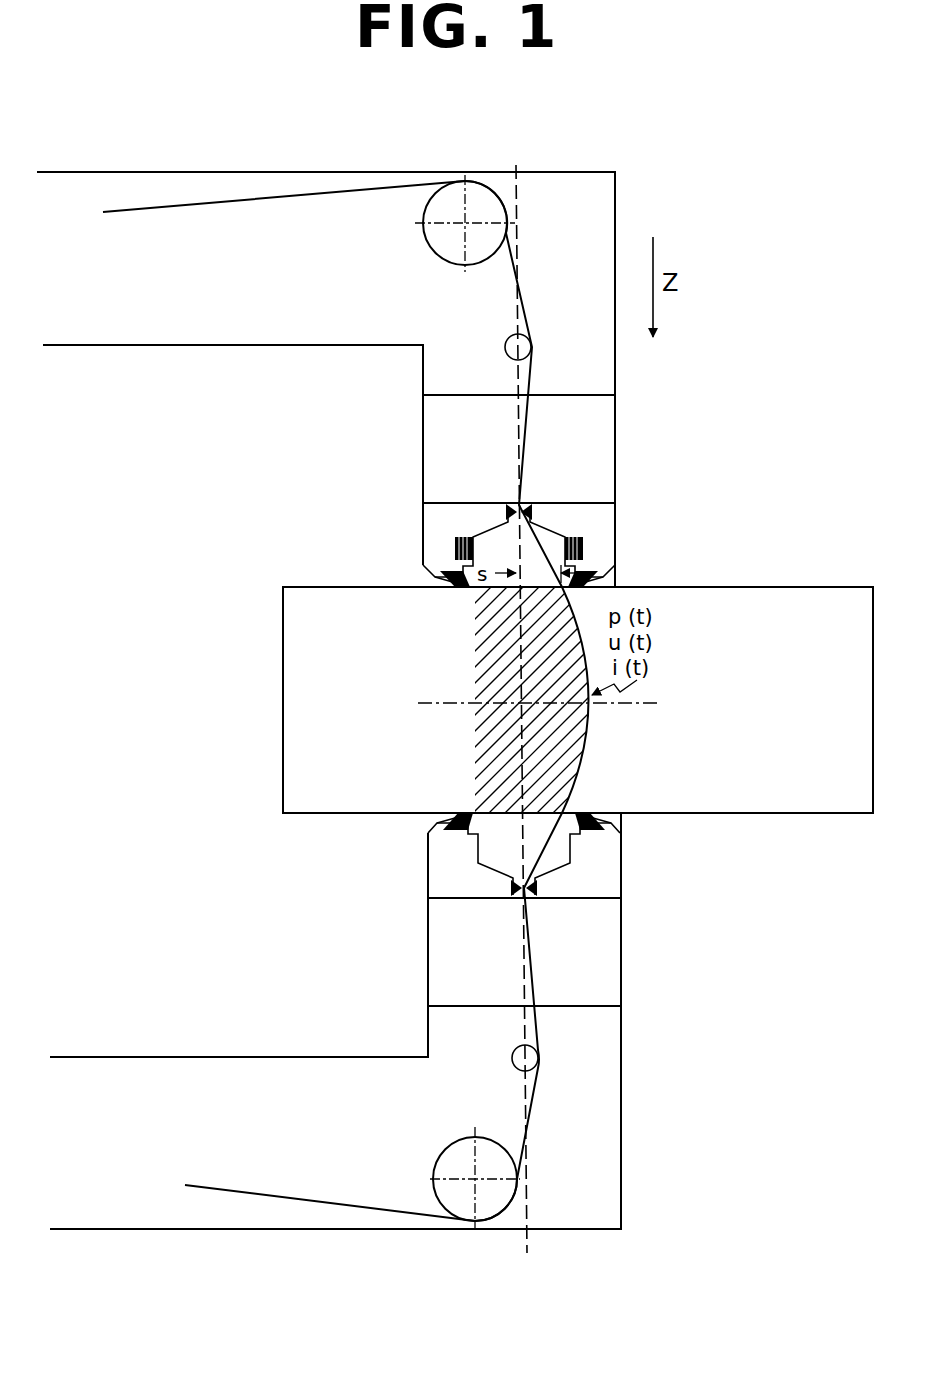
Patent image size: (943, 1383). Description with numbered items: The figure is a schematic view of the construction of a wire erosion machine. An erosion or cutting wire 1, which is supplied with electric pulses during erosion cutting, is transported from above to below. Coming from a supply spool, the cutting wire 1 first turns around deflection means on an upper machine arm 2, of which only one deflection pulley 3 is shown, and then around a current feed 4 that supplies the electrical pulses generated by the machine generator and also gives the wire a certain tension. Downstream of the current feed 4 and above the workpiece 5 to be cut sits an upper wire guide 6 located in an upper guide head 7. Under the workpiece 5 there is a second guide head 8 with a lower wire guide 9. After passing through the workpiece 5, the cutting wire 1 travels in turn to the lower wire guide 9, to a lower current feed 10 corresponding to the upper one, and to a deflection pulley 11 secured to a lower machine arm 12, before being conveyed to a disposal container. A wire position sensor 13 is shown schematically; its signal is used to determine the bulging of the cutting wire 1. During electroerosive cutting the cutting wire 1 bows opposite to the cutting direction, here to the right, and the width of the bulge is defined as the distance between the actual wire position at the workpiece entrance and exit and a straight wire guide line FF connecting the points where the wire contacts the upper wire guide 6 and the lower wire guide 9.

The cutting wire 1 is at (312, 190).
The upper machine arm 2 is at (264, 172).
The deflection pulley 3 is at (478, 181).
The current feed 4 is at (533, 350).
The workpiece 5 is at (750, 588).
The upper wire guide 6 is at (530, 507).
The upper guide head 7 is at (618, 518).
The second guide head 8 is at (622, 858).
The lower wire guide 9 is at (533, 887).
The lower current feed 10 is at (540, 1053).
The deflection pulley 11 is at (487, 1222).
The lower machine arm 12 is at (627, 1221).
The wire position sensor 13 is at (583, 545).
The wire guide line FF is at (517, 165).